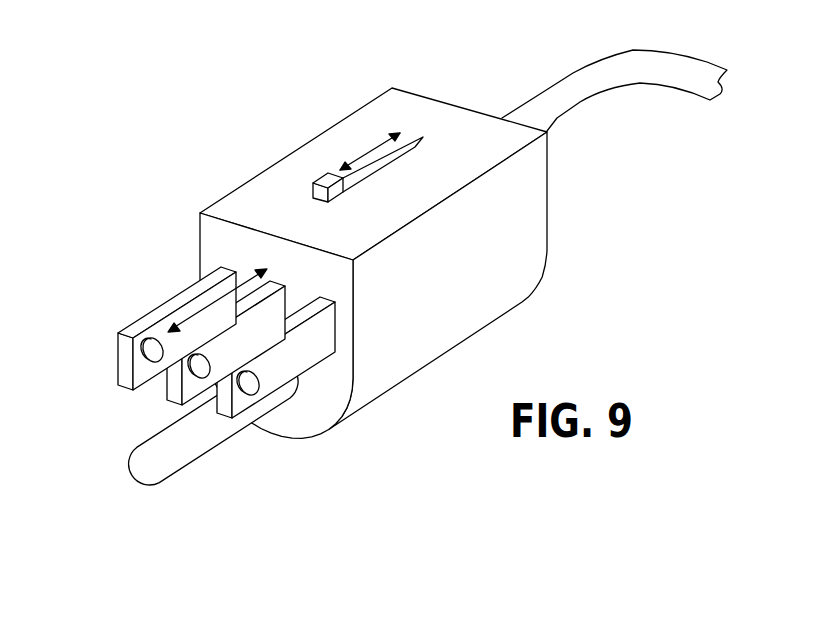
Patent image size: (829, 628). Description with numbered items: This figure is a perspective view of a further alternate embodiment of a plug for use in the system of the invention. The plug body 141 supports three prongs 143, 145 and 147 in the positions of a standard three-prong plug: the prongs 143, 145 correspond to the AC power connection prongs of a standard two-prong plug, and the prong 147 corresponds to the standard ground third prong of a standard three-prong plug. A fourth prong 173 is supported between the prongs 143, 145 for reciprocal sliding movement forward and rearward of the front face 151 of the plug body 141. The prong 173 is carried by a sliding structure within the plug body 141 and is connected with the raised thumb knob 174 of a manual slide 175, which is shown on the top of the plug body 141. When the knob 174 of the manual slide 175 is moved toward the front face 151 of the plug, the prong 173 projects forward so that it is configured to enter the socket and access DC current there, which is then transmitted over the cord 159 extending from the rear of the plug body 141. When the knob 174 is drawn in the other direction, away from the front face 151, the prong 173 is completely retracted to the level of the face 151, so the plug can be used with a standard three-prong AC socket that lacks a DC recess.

The plug body 141 is at (510, 282).
The prong 143 is at (127, 365).
The prong 145 is at (302, 358).
The prong 147 is at (210, 430).
The front face 151 is at (213, 240).
The cord 159 is at (637, 73).
The fourth prong 173 is at (172, 382).
The raised thumb knob 174 is at (325, 175).
The manual slide 175 is at (409, 140).